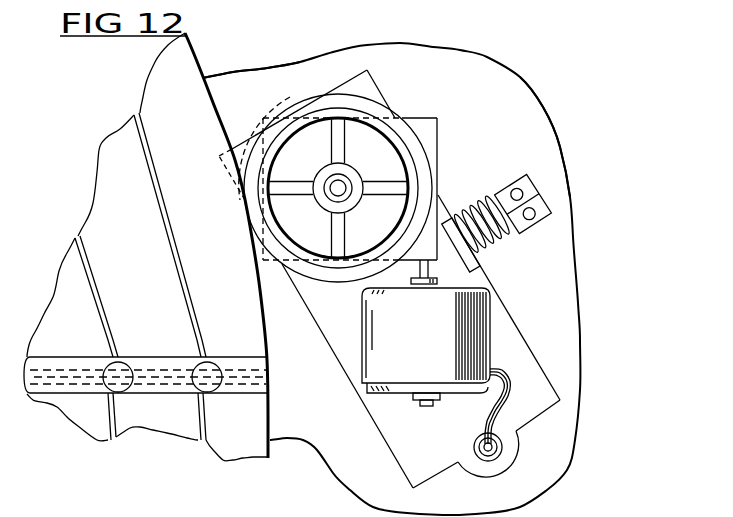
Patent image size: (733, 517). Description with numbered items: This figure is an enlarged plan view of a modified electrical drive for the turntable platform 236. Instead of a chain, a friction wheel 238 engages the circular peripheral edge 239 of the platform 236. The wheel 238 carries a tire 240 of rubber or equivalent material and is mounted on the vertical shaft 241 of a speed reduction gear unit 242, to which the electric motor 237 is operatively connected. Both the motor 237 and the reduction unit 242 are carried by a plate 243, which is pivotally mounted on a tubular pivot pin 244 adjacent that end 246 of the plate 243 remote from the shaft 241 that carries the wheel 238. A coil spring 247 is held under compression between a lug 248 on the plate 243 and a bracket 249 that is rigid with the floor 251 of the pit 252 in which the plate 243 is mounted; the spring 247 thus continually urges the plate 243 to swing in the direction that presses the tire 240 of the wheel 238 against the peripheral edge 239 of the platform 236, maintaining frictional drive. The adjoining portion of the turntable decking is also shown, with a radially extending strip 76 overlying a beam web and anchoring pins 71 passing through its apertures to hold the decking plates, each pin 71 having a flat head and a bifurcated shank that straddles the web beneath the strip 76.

The turntable platform 236 is at (182, 68).
The circular peripheral edge 239 is at (203, 78).
The pit 252 is at (350, 60).
The friction wheel 238 is at (365, 117).
The tire 240 is at (412, 114).
The vertical shaft 241 is at (338, 189).
The speed reduction gear unit 242 is at (438, 170).
The floor 251 is at (551, 157).
The bracket 249 is at (545, 205).
The coil spring 247 is at (498, 250).
The lug 248 is at (485, 263).
The electric motor 237 is at (475, 327).
The plate 243 is at (522, 363).
The end of the plate 246 is at (562, 395).
The tubular pivot pin 244 is at (501, 448).
The strip 76 is at (73, 390).
The anchoring pin 71 is at (133, 407).